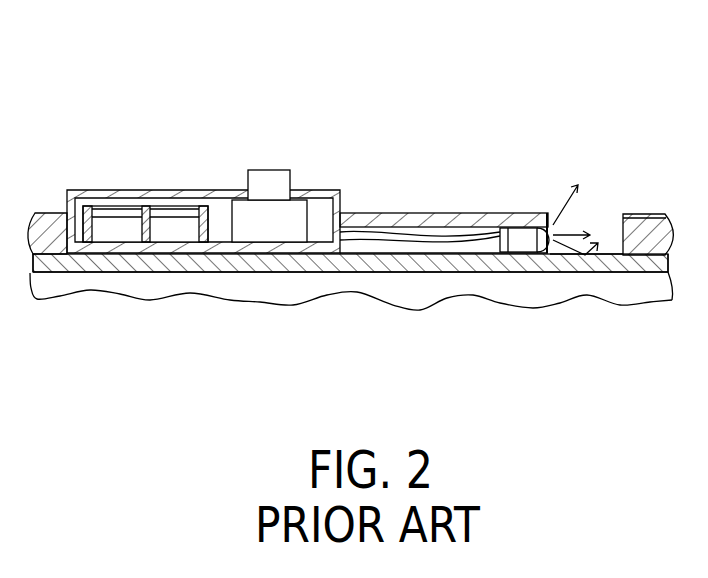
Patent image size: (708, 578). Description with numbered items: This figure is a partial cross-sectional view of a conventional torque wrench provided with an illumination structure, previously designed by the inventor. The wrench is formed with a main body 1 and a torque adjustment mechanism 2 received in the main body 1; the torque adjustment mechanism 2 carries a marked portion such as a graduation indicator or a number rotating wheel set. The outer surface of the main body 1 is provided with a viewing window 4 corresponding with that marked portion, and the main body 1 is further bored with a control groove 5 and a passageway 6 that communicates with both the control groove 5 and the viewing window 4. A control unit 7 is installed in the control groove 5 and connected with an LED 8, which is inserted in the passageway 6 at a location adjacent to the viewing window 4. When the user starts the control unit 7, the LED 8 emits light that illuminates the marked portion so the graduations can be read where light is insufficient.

The main body 1 is at (645, 213).
The torque adjustment mechanism 2 is at (602, 262).
The viewing window 4 is at (612, 237).
The control groove 5 is at (270, 271).
The passageway 6 is at (472, 237).
The control unit 7 is at (292, 190).
The LED 8 is at (515, 253).